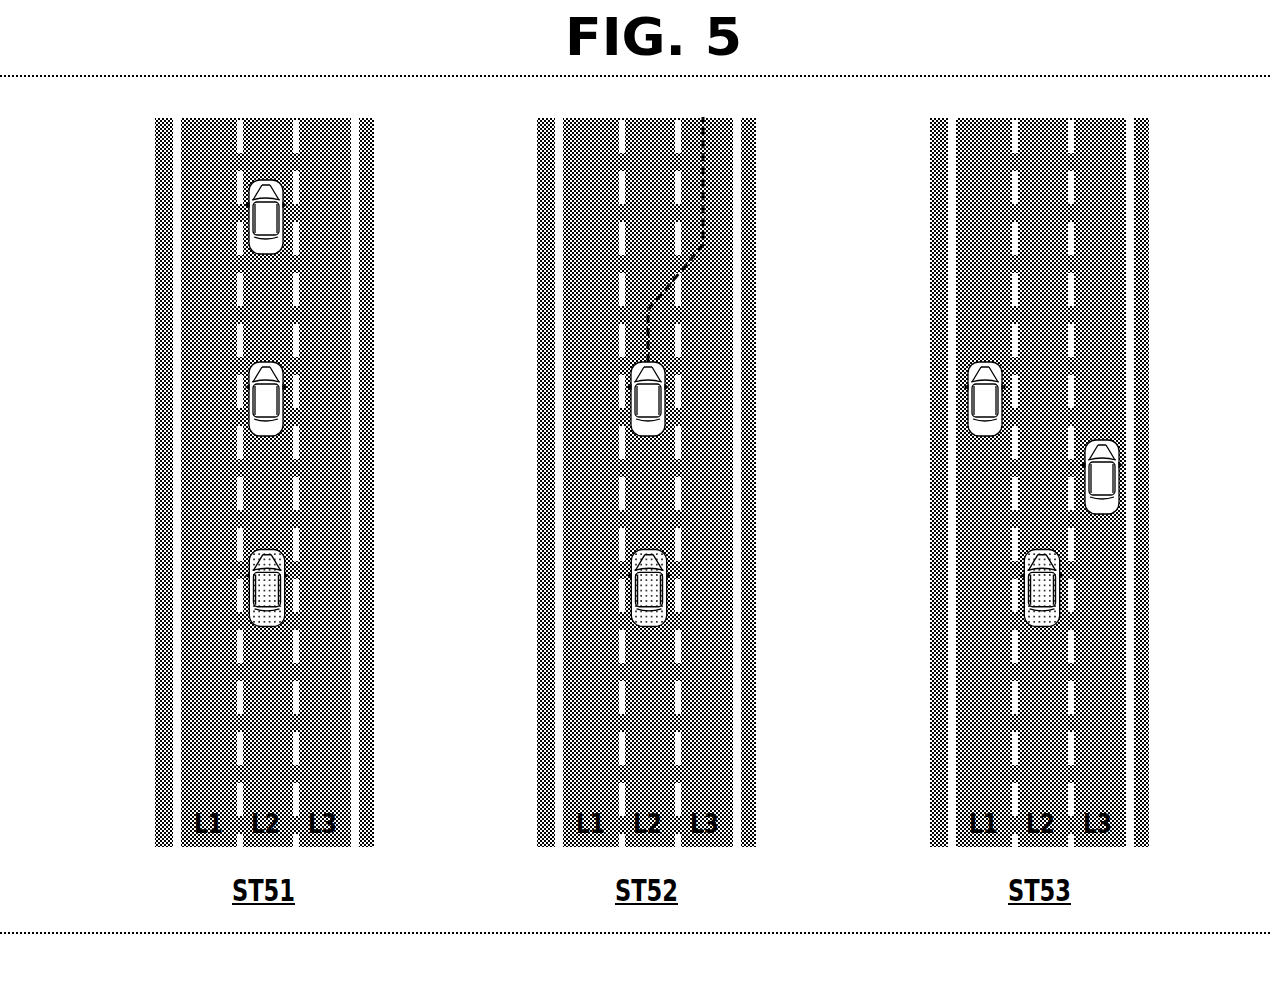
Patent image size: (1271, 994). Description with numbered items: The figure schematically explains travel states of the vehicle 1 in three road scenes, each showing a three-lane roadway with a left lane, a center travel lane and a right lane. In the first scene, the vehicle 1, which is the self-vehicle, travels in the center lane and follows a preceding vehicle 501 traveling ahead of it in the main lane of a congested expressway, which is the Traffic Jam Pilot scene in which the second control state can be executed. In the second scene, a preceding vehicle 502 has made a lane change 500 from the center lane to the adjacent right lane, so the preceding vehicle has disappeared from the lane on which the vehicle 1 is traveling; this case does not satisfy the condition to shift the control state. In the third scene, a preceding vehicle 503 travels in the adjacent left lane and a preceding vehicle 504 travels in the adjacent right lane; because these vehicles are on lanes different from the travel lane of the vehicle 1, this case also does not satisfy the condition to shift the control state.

The vehicle 1 is at (254, 593).
The lane change 500 is at (662, 295).
The preceding vehicle 501 is at (252, 405).
The preceding vehicle 502 is at (634, 407).
The preceding vehicle 503 is at (980, 405).
The preceding vehicle 504 is at (1100, 480).